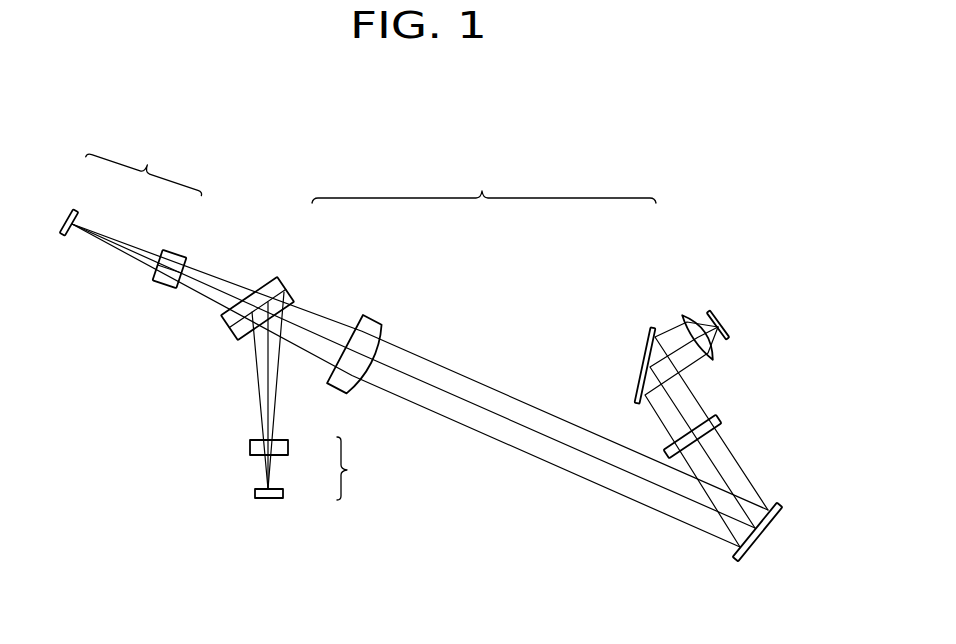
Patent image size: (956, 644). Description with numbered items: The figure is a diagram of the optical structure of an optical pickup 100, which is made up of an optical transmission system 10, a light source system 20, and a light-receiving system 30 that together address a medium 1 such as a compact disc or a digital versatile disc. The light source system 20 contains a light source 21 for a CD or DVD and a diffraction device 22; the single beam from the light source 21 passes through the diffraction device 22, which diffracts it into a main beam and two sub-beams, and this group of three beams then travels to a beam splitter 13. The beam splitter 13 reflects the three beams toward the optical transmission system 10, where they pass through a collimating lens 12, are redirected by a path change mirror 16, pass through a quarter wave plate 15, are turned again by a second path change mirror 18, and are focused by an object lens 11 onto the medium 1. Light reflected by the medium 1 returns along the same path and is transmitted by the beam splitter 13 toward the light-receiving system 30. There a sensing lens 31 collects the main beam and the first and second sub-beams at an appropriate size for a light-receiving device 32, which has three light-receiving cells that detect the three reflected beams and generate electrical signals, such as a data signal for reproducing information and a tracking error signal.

The optical pickup 100 is at (743, 186).
The optical transmission system 10 is at (484, 182).
The light-receiving system 30 is at (145, 166).
The light-receiving device 32 is at (74, 211).
The sensing lens 31 is at (177, 254).
The beam splitter 13 is at (281, 289).
The collimating lens 12 is at (373, 325).
The diffraction device 22 is at (288, 446).
The light source 21 is at (283, 494).
The light source system 20 is at (360, 468).
The path change mirror 18 is at (647, 358).
The object lens 11 is at (713, 358).
The medium 1 is at (713, 312).
The quarter wave plate 15 is at (719, 414).
The path change mirror 16 is at (778, 503).